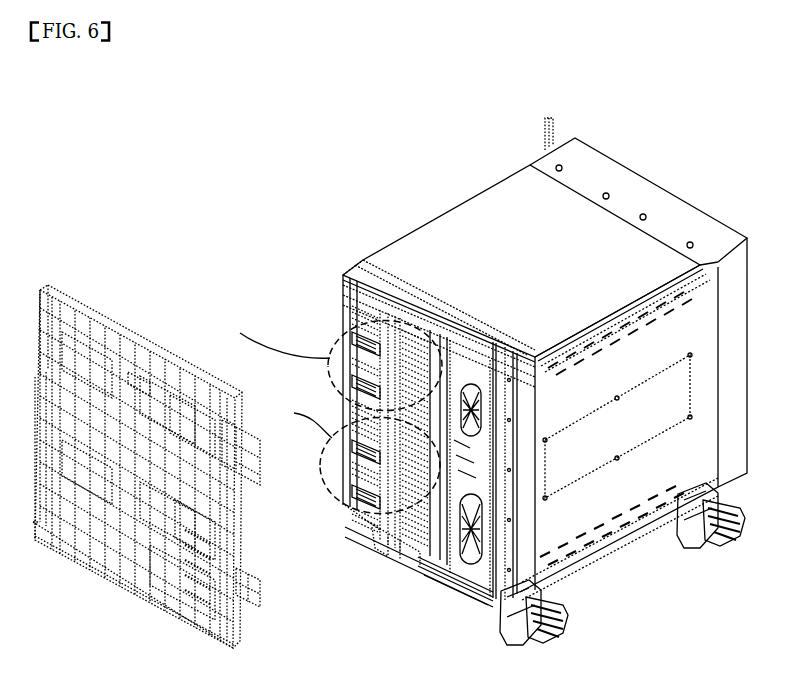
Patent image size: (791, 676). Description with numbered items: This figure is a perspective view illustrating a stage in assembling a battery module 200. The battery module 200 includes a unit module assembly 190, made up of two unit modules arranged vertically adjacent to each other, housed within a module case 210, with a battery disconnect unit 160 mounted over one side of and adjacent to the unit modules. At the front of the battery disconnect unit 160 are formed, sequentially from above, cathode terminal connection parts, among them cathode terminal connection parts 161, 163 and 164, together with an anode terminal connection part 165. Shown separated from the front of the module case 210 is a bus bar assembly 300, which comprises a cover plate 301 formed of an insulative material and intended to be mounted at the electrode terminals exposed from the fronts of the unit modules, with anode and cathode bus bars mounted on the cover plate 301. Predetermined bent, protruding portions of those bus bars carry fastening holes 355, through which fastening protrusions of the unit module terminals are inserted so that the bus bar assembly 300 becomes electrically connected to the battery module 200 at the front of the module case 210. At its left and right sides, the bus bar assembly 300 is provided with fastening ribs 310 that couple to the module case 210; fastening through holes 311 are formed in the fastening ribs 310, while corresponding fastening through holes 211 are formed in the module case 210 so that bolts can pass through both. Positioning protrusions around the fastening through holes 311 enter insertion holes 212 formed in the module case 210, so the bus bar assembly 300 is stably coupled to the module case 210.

The battery module 200 is at (119, 174).
The module case 210 is at (473, 222).
The fastening through holes 211 is at (507, 432).
The insertion holes 212 is at (505, 440).
The unit module assembly 190 is at (328, 294).
The battery disconnect unit 160 is at (483, 572).
The cathode terminal connection part 161 is at (467, 554).
The cathode terminal connection part 163 is at (362, 384).
The cathode terminal connection part 164 is at (458, 547).
The anode terminal connection part 165 is at (363, 341).
The bus bar assembly 300 is at (118, 304).
The cover plate 301 is at (62, 300).
The fastening ribs 310 is at (255, 578).
The fastening through holes 311 is at (258, 584).
The fastening holes 355 is at (140, 377).